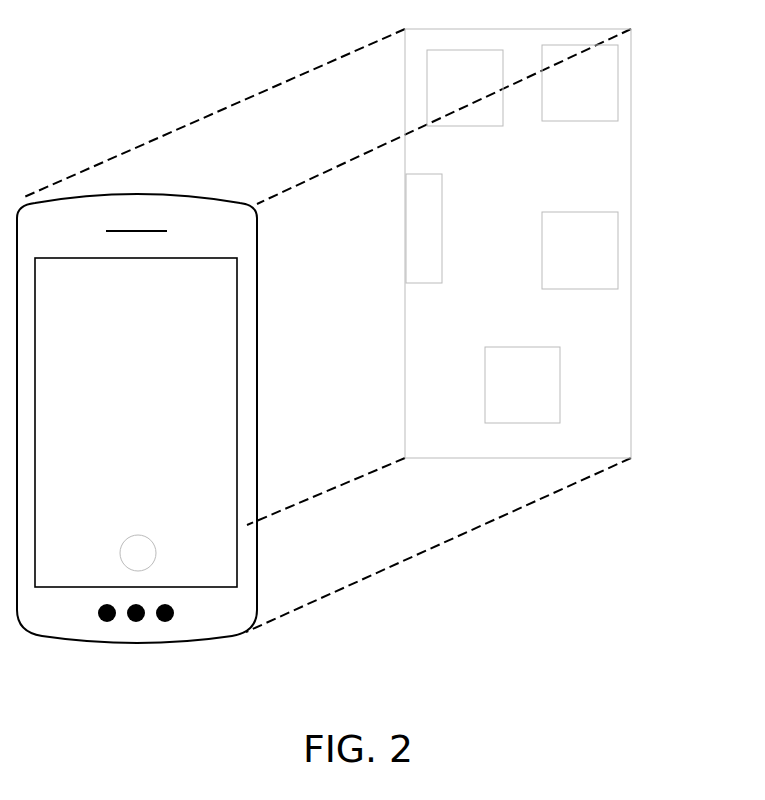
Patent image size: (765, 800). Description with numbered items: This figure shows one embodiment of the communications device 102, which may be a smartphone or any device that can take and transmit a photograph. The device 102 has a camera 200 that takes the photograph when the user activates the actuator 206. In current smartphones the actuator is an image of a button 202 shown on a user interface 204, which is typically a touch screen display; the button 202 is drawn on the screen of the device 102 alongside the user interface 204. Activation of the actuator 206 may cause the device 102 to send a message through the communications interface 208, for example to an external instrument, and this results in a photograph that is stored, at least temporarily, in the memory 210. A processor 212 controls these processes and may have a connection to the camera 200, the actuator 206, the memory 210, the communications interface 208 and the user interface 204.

The communications device 102 is at (163, 135).
The camera 200 is at (425, 85).
The button 202 is at (128, 555).
The user interface 204 is at (146, 424).
The actuator 206 is at (489, 387).
The communications interface 208 is at (406, 240).
The memory 210 is at (620, 77).
The processor 212 is at (616, 250).